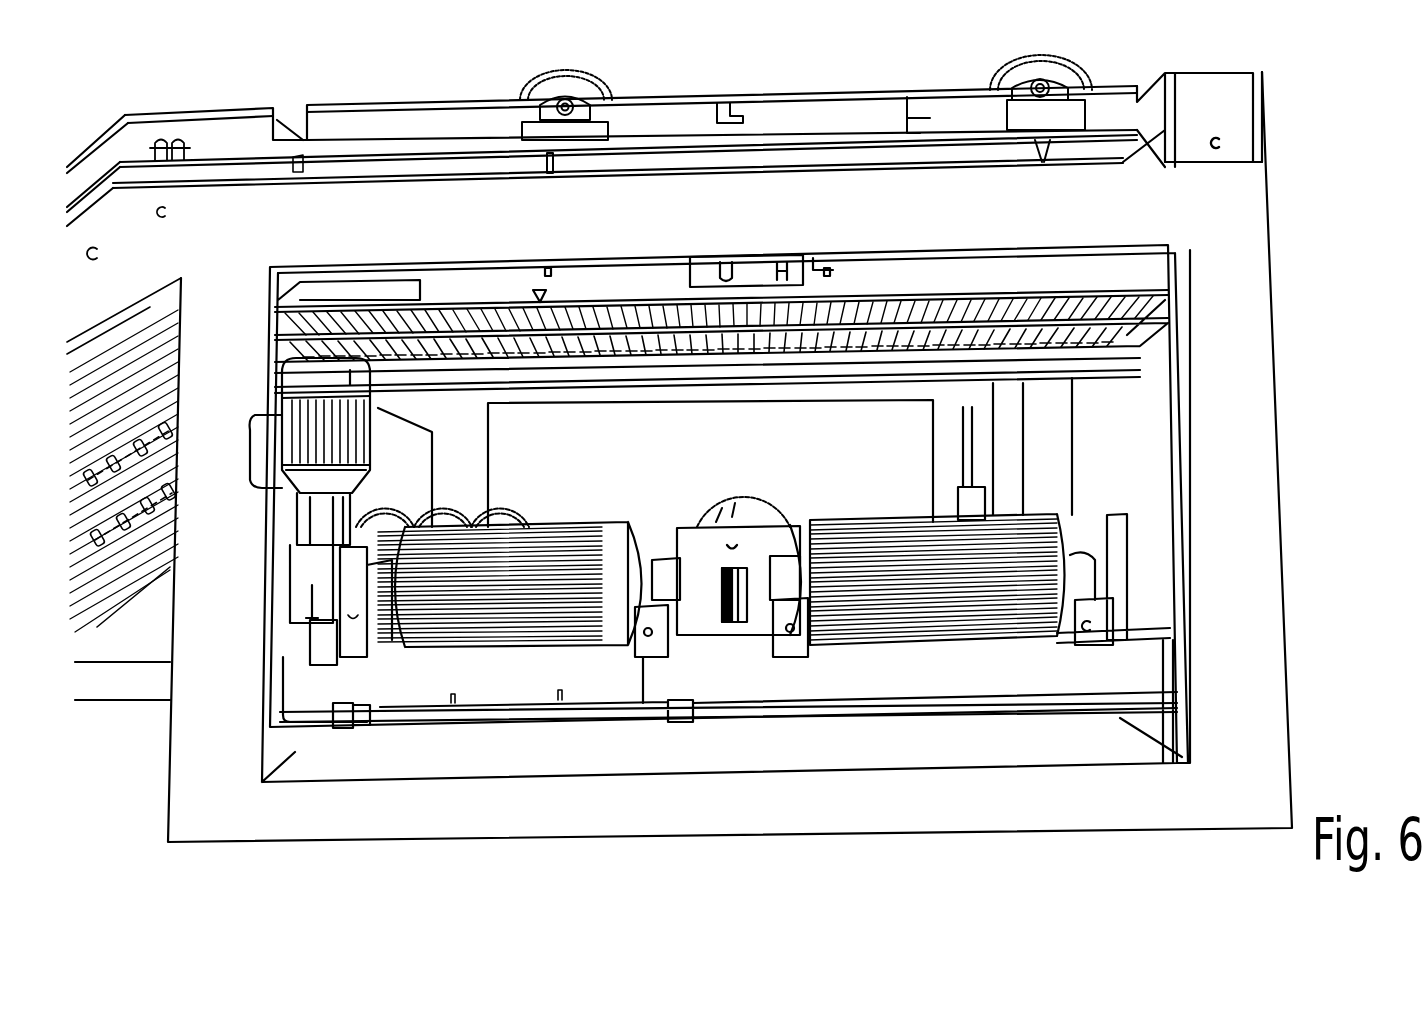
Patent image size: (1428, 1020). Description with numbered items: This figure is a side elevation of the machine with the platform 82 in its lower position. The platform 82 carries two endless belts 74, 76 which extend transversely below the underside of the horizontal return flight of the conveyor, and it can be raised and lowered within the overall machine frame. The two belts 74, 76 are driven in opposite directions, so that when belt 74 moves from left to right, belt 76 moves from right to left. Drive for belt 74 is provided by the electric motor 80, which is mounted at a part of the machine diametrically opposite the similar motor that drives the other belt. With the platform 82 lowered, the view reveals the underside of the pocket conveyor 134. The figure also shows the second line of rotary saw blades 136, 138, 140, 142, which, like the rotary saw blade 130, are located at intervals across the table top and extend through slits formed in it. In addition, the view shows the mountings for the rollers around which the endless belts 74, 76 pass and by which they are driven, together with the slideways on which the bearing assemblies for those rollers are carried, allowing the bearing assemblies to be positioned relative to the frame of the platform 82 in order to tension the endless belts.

The endless belt 74 is at (880, 515).
The endless belt 76 is at (614, 542).
The electric motor 80 is at (277, 417).
The platform 82 is at (852, 693).
The rotary saw blade 130 is at (750, 512).
The pocket conveyor 134 is at (683, 385).
The rotary saw blade 136 is at (510, 515).
The rotary saw blade 138 is at (475, 503).
The rotary saw blade 140 is at (390, 542).
The rotary saw blade 142 is at (385, 518).